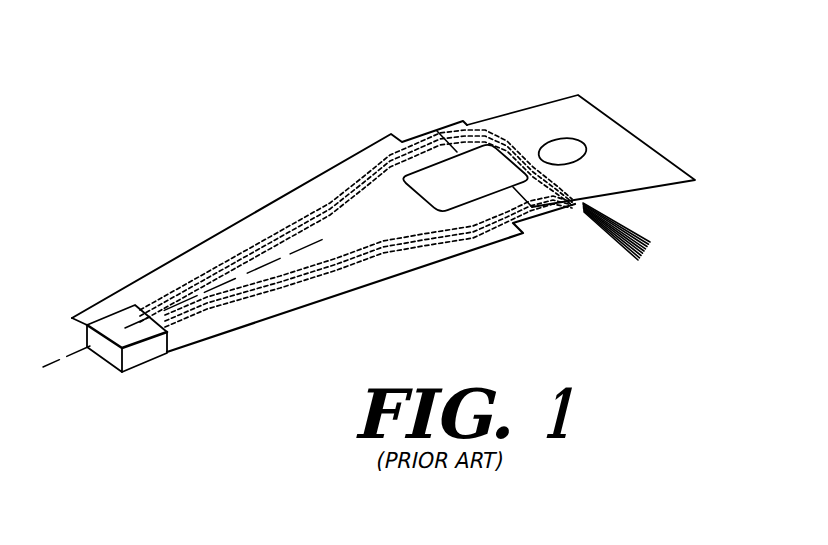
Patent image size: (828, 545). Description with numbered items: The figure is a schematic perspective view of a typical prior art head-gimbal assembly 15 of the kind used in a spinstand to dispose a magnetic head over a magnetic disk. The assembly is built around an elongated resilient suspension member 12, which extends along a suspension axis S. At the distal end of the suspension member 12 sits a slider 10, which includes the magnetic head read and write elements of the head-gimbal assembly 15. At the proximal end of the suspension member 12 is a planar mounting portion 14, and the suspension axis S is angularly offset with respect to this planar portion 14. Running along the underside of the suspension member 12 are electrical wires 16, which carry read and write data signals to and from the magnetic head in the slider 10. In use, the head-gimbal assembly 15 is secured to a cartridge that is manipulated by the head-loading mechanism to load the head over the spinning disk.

The slider 10 is at (105, 358).
The elongated resilient suspension member 12 is at (313, 197).
The planar mounting portion 14 is at (547, 117).
The head-gimbal assembly 15 is at (77, 205).
The electrical wires 16 is at (607, 230).
The suspension axis S is at (60, 357).